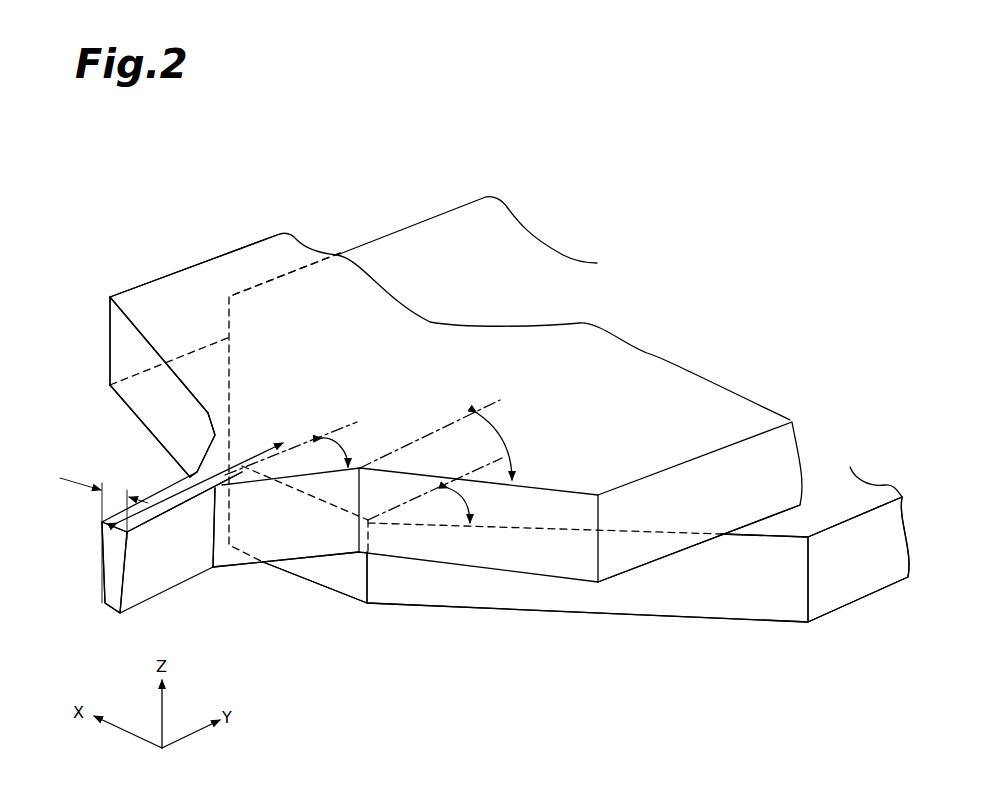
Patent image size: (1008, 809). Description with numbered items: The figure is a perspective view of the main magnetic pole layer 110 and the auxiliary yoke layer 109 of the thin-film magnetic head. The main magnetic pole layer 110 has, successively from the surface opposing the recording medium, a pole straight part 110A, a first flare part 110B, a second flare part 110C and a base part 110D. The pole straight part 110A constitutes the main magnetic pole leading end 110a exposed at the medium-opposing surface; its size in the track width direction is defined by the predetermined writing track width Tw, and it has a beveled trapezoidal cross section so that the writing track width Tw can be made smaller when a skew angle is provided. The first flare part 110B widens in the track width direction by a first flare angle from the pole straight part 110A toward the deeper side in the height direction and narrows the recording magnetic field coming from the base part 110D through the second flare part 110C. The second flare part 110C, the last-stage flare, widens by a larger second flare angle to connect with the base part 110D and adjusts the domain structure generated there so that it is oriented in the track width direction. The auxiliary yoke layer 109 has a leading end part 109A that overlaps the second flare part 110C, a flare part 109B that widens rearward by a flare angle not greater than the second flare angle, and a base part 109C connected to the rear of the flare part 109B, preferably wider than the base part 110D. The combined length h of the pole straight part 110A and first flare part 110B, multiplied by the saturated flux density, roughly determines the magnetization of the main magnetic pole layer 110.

The auxiliary yoke layer 109 is at (548, 298).
The leading end part 109A is at (310, 572).
The flare part 109B is at (633, 600).
The base part (yoke part) 109C is at (853, 577).
The main magnetic pole layer 110 is at (403, 363).
The pole straight part 110A is at (163, 507).
The first flare part 110B is at (215, 437).
The second flare part 110C is at (155, 327).
The base part 110D is at (245, 272).
The main magnetic pole leading end 110a is at (112, 602).
The writing track width Tw is at (120, 493).
The length of the pole straight part and the first flare part h is at (143, 505).